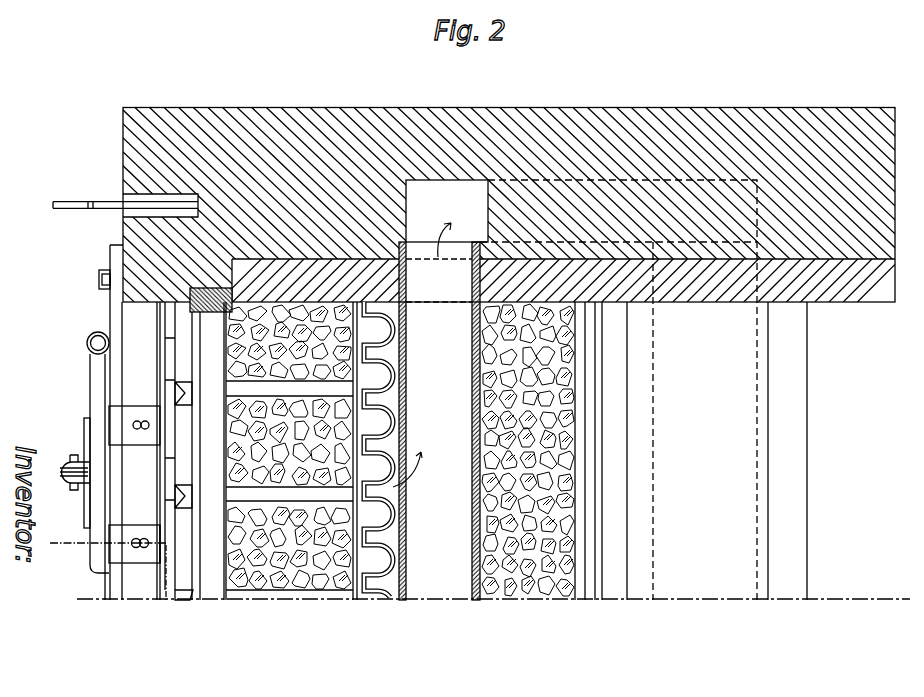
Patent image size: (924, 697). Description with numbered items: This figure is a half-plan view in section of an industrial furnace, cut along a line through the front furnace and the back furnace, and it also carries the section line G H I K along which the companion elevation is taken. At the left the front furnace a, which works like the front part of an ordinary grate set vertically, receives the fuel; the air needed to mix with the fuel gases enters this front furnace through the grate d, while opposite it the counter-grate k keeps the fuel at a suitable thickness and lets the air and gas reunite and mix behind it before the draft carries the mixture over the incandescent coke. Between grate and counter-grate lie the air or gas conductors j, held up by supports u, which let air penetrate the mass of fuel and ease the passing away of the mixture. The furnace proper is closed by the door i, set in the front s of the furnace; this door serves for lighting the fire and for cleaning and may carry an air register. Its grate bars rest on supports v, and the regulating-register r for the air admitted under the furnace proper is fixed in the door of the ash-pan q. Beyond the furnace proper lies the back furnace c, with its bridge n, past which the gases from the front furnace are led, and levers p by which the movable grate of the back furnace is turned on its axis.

The levers p is at (125, 211).
The front of the furnace s is at (105, 422).
The ash-pan q is at (97, 364).
The regulating-register r is at (73, 490).
The door i is at (294, 421).
The air or gas conductors j is at (189, 397).
The supports u is at (176, 446).
The grate d is at (226, 490).
The section line point I is at (178, 584).
The supports v is at (208, 451).
The section line point G is at (101, 543).
The section line point H is at (173, 544).
The front furnace a is at (312, 580).
The counter-grate k is at (375, 451).
The back furnace c is at (560, 438).
The bridge n is at (696, 451).
The section line point K is at (493, 589).